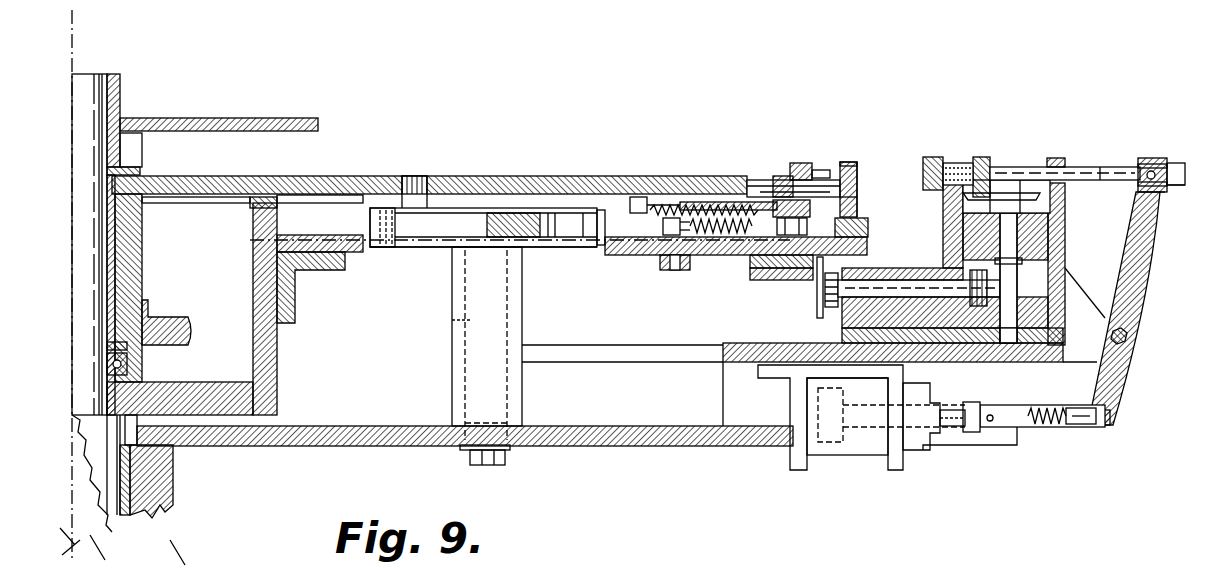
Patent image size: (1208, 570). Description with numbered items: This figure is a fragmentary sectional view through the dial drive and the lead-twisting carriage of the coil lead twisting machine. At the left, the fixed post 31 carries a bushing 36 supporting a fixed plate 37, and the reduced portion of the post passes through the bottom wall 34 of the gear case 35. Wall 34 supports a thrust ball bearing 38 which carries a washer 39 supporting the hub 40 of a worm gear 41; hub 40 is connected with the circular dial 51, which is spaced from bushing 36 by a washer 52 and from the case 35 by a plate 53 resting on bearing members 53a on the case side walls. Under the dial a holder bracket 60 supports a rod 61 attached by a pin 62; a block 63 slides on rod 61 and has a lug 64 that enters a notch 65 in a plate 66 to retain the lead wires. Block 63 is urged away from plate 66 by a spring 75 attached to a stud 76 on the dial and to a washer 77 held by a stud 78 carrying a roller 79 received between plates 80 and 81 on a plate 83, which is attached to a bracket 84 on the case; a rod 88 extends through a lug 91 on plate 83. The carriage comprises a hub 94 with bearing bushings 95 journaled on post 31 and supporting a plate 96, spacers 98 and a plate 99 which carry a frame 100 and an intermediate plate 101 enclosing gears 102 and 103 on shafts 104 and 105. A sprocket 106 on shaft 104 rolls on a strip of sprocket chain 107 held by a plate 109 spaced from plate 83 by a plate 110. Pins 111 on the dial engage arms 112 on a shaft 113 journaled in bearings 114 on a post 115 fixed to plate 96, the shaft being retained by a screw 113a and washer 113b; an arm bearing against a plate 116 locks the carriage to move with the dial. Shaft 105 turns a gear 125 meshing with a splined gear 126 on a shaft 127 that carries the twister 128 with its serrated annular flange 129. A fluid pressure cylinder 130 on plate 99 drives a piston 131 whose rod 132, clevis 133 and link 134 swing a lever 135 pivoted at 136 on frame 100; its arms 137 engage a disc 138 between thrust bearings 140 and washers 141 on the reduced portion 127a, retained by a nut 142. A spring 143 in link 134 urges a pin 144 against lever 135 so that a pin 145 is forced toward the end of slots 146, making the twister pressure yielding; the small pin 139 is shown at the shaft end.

The post 31 is at (80, 258).
The bottom wall 34 is at (230, 390).
The gear case 35 is at (272, 345).
The bushing 36 is at (115, 80).
The fixed plate 37 is at (240, 118).
The thrust ball bearing 38 is at (108, 364).
The washer 39 is at (110, 345).
The hub 40 is at (135, 265).
The worm gear 41 is at (178, 325).
The dial 51 is at (270, 185).
The washer 52 is at (143, 168).
The plate 53 is at (310, 200).
The bearing members 53a is at (252, 212).
The bracket 60 is at (698, 195).
The rod 61 is at (780, 178).
The pin 62 is at (770, 180).
The block 63 is at (800, 163).
The lug 64 is at (820, 170).
The notch 65 is at (846, 165).
The plate 66 is at (856, 165).
The spring 75 is at (660, 222).
The stud 76 is at (650, 208).
The washer 77 is at (850, 210).
The stud 78 is at (858, 180).
The roller 79 is at (765, 215).
The plate 80 is at (860, 237).
The plate 81 is at (700, 245).
The plate 83 is at (350, 237).
The bracket 84 is at (318, 270).
The rod 88 is at (680, 265).
The lug 91 is at (665, 270).
The hub 94 is at (175, 497).
The bearing bushings 95 is at (133, 480).
The plate 96 is at (665, 428).
The spacers 98 is at (722, 393).
The plate 99 is at (683, 343).
The frame 100 is at (1065, 246).
The intermediate plate 101 is at (1065, 330).
The gear 102 is at (982, 308).
The gear 103 is at (1022, 268).
The shaft 104 is at (845, 410).
The shaft 105 is at (1000, 295).
The sprocket 106 is at (826, 302).
The sprocket chain 107 is at (816, 272).
The plate 109 is at (795, 280).
The plate 110 is at (770, 268).
The pins 111 is at (414, 178).
The arms 112 is at (418, 250).
The shaft 113 is at (452, 322).
The screw 113a is at (505, 462).
The washer 113b is at (460, 448).
The bearings 114 is at (512, 285).
The post 115 is at (452, 354).
The plate 116 is at (505, 215).
The gear 125 is at (1020, 205).
The gear 126 is at (985, 170).
The shaft 127 is at (1070, 166).
The reduced portion 127a is at (1128, 172).
The twister 128 is at (945, 160).
The serrated annular flange 129 is at (930, 155).
The fluid pressure cylinder 130 is at (830, 456).
The piston 131 is at (875, 455).
The rod 132 is at (960, 435).
The clevis 133 is at (978, 405).
The link 134 is at (1040, 428).
The lever 135 is at (1137, 291).
The pivot 136 is at (1127, 336).
The arms 137 is at (1162, 193).
The disc 138 is at (1180, 186).
The pin 139 is at (1152, 170).
The thrust bearings 140 is at (1144, 157).
The washers 141 is at (1140, 165).
The nut 142 is at (1185, 172).
The spring 143 is at (1040, 405).
The pin 144 is at (1078, 425).
The pin 145 is at (1110, 416).
The slots 146 is at (1096, 412).